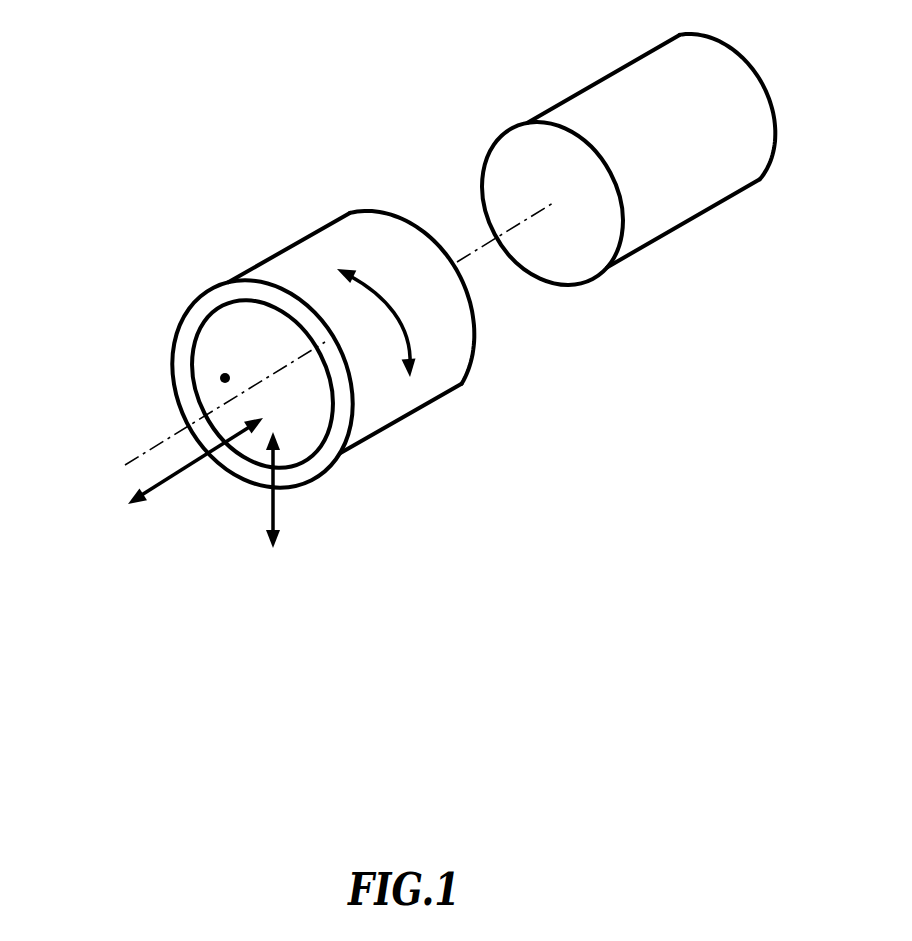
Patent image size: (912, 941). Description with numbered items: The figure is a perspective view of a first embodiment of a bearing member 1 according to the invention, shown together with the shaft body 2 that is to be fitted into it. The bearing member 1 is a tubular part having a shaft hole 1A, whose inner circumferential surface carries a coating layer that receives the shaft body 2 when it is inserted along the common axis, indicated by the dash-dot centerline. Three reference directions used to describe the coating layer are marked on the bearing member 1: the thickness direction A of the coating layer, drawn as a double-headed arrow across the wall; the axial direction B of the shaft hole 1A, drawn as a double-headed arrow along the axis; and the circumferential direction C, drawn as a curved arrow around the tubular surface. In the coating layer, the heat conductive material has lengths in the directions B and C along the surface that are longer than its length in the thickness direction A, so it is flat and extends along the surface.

The bearing member 1 is at (231, 257).
The shaft hole 1A is at (222, 380).
The shaft body 2 is at (611, 106).
The thickness direction A is at (282, 503).
The axial direction B is at (193, 463).
The circumferential direction C is at (400, 325).